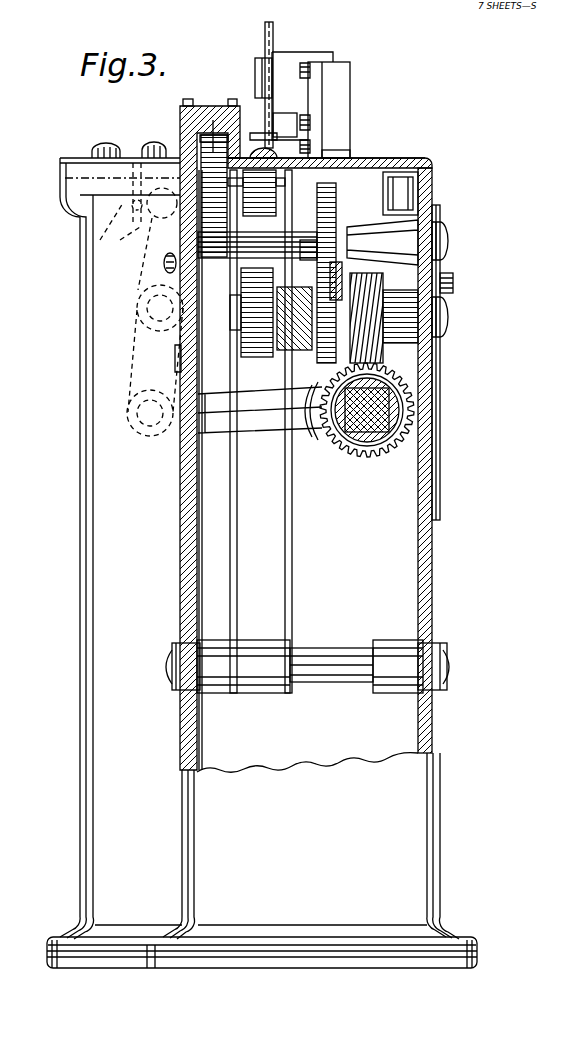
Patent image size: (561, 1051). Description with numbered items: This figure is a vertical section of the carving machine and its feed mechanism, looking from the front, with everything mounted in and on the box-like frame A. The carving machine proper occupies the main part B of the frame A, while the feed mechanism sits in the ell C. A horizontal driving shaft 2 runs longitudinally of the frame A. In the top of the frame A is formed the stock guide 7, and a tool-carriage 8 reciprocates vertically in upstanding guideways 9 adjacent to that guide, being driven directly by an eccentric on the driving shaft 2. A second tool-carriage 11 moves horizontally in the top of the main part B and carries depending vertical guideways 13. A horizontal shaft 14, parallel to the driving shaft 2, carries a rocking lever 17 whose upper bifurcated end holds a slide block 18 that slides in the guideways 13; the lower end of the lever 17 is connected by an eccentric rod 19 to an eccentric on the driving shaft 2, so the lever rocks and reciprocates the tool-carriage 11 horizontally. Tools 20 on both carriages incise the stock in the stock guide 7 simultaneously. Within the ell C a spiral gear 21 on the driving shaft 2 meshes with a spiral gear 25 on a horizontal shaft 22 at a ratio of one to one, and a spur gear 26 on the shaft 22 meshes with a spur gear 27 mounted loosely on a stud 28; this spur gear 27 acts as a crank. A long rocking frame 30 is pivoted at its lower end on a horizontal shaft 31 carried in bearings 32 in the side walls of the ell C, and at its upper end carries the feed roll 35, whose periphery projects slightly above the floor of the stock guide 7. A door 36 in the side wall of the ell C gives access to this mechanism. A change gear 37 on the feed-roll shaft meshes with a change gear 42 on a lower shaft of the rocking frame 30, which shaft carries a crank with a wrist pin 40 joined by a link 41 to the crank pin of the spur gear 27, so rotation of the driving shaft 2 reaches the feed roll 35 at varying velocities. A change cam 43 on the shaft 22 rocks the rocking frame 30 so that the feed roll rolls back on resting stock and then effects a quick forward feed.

The driving shaft 2 is at (367, 430).
The stock guide 7 is at (283, 157).
The tool-carriage 8 is at (292, 62).
The vertical guideways 9 is at (331, 84).
The tool-carriage 11 is at (122, 159).
The vertical guideways 13 is at (115, 208).
The horizontal shaft 14 is at (137, 310).
The rocking lever 17 is at (150, 347).
The slide block 18 is at (142, 254).
The eccentric rod 19 is at (260, 410).
The tools 20 is at (272, 74).
The spiral gear 21 is at (397, 388).
The horizontal shaft 22 is at (448, 316).
The spiral gear 25 is at (370, 323).
The spur gear 26 is at (328, 345).
The spur gear 27 is at (330, 213).
The stud 28 is at (337, 233).
The rocking frame 30 is at (285, 484).
The horizontal shaft 31 is at (327, 665).
The bearing 32 is at (170, 665).
The feed roll 35 is at (293, 177).
The door 36 is at (440, 433).
The change gear 37 is at (216, 135).
The wrist pin 40 is at (440, 250).
The link 41 is at (345, 245).
The change gear 42 is at (217, 245).
The change cam 43 is at (258, 342).
The frame A is at (262, 962).
The main part B is at (120, 548).
The ell C is at (432, 593).